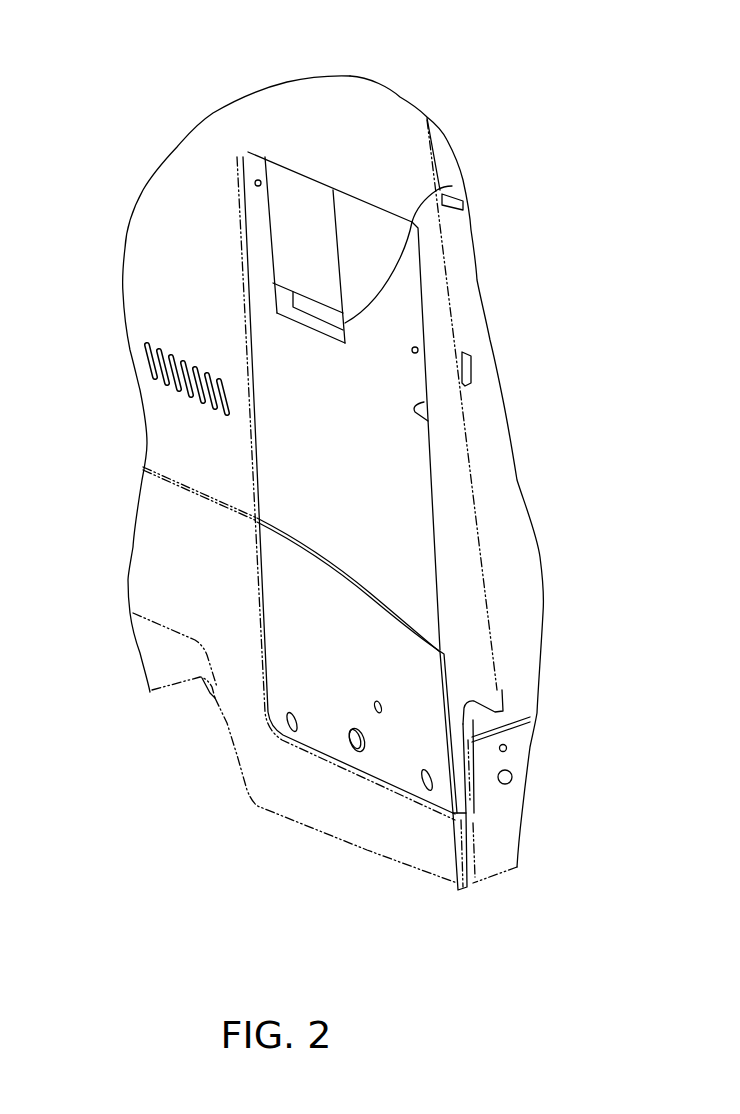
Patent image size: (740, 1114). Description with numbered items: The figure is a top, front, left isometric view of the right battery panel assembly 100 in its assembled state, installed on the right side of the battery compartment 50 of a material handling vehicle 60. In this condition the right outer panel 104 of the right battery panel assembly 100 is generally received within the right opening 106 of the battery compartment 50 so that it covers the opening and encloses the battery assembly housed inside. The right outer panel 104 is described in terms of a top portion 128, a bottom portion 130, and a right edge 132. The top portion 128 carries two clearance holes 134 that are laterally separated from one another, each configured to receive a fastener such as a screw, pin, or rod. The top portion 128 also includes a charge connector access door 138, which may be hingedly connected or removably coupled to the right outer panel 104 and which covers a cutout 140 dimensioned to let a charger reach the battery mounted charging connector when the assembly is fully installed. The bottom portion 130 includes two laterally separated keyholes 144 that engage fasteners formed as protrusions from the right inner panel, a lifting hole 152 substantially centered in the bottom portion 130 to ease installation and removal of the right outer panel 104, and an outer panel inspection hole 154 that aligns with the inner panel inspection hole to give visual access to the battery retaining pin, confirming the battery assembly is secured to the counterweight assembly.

The right battery panel assembly 100 is at (205, 245).
The material handling vehicle 60 is at (397, 122).
The battery compartment 50 is at (423, 288).
The top portion 128 is at (353, 158).
The charge connector access door 138 is at (300, 212).
The clearance hole 134 is at (257, 180).
The cutout 140 is at (445, 188).
The right opening 106 is at (424, 402).
The right outer panel 104 is at (280, 435).
The bottom portion 130 is at (283, 767).
The right edge 132 is at (452, 768).
The lifting hole 152 is at (353, 752).
The outer panel inspection hole 154 is at (380, 710).
The keyhole 144 is at (418, 793).